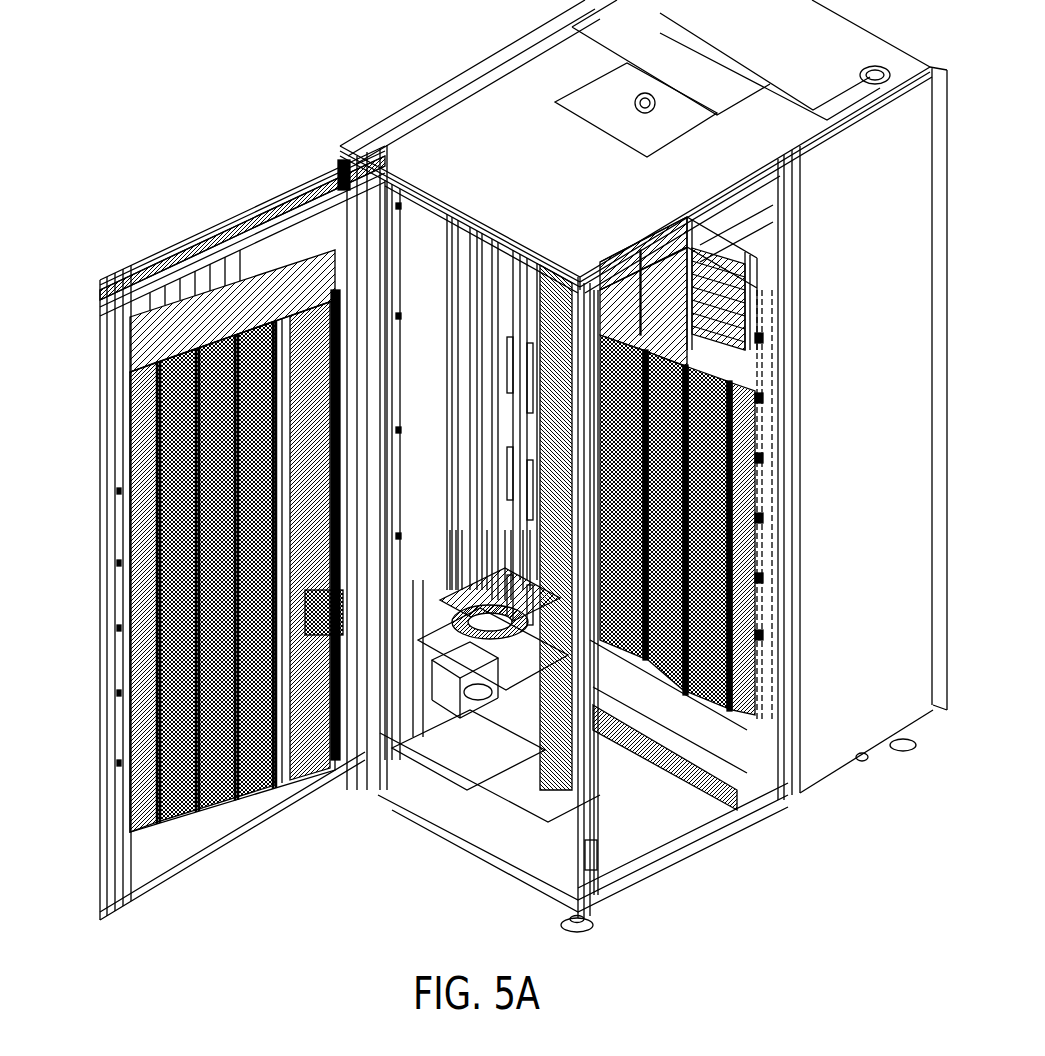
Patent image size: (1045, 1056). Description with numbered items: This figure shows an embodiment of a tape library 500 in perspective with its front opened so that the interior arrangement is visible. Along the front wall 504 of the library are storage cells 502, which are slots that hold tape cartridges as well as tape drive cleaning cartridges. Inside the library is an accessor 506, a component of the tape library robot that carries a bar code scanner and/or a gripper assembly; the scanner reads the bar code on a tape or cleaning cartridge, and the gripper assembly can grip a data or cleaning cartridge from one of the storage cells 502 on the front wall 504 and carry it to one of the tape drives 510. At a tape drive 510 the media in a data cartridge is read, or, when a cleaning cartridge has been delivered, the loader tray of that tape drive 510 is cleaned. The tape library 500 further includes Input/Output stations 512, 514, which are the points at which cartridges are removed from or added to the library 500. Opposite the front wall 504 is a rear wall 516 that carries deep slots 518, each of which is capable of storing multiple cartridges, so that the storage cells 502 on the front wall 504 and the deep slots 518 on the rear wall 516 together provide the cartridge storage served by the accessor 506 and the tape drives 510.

The tape library 500 is at (430, 855).
The storage cells 502 is at (133, 700).
The front wall 504 is at (115, 494).
The accessor 506 is at (523, 707).
The tape drives 510 is at (737, 295).
The Input/Output station 512 is at (342, 382).
The Input/Output station 514 is at (338, 610).
The rear wall 516 is at (503, 292).
The deep slots 518 is at (745, 514).